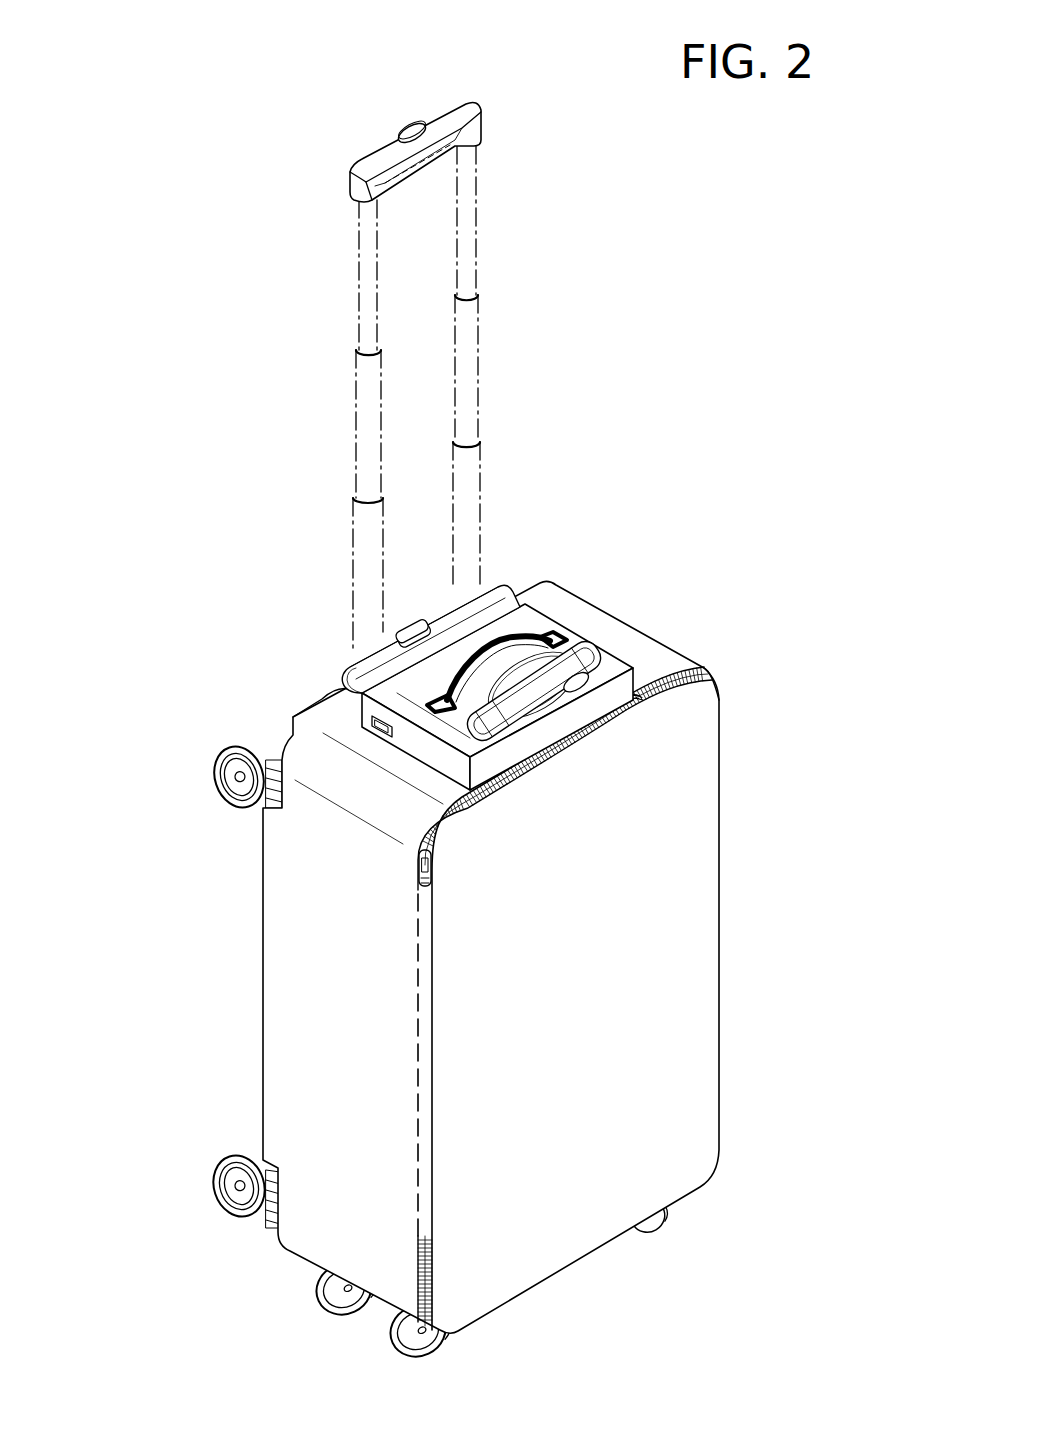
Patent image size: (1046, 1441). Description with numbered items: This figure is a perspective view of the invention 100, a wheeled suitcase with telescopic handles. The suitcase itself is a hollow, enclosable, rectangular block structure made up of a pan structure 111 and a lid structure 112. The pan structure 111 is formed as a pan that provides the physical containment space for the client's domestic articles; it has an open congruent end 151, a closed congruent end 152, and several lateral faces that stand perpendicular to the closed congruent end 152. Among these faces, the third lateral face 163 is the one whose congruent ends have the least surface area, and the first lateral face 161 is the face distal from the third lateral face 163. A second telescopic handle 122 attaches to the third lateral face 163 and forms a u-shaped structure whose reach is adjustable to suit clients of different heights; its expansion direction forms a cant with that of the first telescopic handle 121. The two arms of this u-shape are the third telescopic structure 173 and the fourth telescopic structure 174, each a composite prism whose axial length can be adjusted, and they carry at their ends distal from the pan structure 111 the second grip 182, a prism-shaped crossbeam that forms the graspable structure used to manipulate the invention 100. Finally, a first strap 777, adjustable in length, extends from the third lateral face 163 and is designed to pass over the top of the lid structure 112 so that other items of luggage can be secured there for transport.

The invention 100 is at (159, 210).
The pan structure 111 is at (657, 667).
The lid structure 112 is at (278, 980).
The first telescopic handle 121 is at (521, 733).
The second telescopic handle 122 is at (482, 106).
The open congruent end 151 is at (416, 1073).
The closed congruent end 152 is at (263, 915).
The first lateral face 161 is at (291, 1244).
The third lateral face 163 is at (610, 635).
The third telescopic structure 173 is at (370, 275).
The fourth telescopic structure 174 is at (470, 220).
The second grip 182 is at (447, 116).
The first strap 777 is at (562, 730).